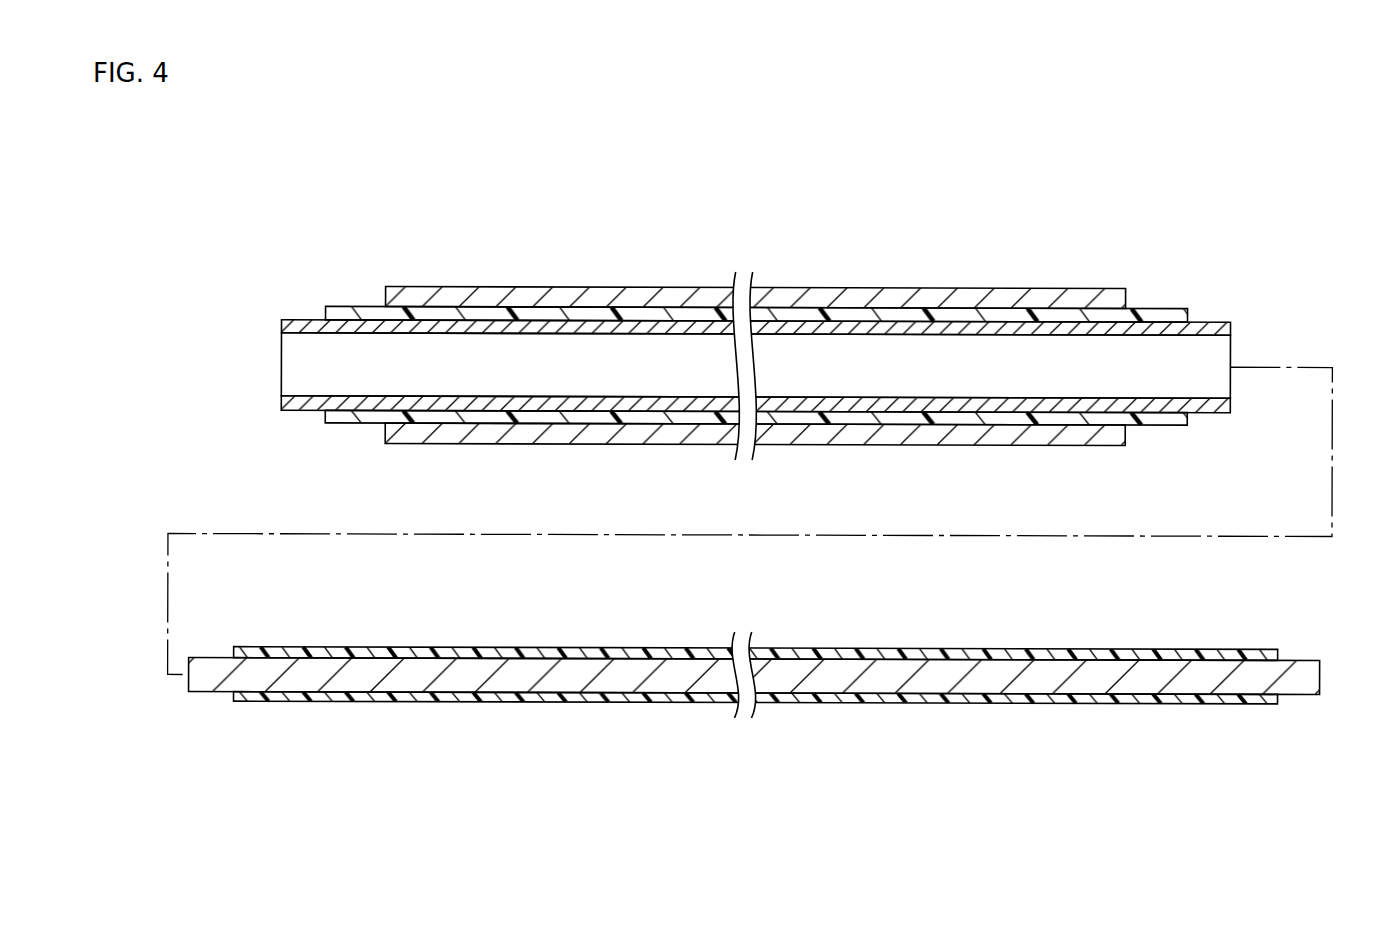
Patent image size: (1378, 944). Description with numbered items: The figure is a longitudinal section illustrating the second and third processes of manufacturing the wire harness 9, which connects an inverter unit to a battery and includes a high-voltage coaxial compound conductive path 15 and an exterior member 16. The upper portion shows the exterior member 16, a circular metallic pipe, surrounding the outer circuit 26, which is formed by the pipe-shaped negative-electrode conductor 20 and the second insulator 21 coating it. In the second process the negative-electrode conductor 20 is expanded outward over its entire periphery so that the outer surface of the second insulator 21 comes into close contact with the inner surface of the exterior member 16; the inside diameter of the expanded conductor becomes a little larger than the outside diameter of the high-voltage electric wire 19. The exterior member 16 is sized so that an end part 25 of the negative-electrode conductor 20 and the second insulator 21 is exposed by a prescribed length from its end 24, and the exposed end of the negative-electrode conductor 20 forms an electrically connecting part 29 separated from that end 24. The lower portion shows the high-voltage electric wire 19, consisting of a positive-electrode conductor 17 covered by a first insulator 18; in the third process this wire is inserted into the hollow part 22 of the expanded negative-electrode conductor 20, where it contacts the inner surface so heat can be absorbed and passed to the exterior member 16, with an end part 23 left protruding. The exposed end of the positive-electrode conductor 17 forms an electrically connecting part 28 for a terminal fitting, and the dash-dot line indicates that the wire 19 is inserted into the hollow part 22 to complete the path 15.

The wire harness 9 is at (1244, 258).
The high-voltage coaxial compound conductive path 15 is at (992, 743).
The exterior member 16 is at (817, 293).
The positive-electrode conductor 17 is at (212, 662).
The first insulator 18 is at (253, 648).
The high-voltage electric wire 19 is at (183, 591).
The negative-electrode conductor 20 is at (298, 318).
The second insulator 21 is at (350, 307).
The hollow part 22 is at (592, 388).
The end part of the high-voltage electric wire 23 is at (258, 703).
The end of the exterior member 24 is at (386, 302).
The end part of the negative-electrode conductor and second insulator 25 is at (348, 424).
The outer circuit 26 is at (276, 193).
The electrically connecting part 28 is at (200, 693).
The electrically connecting part 29 is at (297, 412).